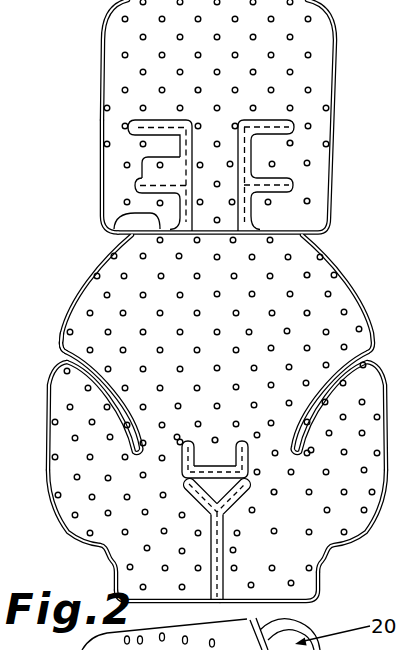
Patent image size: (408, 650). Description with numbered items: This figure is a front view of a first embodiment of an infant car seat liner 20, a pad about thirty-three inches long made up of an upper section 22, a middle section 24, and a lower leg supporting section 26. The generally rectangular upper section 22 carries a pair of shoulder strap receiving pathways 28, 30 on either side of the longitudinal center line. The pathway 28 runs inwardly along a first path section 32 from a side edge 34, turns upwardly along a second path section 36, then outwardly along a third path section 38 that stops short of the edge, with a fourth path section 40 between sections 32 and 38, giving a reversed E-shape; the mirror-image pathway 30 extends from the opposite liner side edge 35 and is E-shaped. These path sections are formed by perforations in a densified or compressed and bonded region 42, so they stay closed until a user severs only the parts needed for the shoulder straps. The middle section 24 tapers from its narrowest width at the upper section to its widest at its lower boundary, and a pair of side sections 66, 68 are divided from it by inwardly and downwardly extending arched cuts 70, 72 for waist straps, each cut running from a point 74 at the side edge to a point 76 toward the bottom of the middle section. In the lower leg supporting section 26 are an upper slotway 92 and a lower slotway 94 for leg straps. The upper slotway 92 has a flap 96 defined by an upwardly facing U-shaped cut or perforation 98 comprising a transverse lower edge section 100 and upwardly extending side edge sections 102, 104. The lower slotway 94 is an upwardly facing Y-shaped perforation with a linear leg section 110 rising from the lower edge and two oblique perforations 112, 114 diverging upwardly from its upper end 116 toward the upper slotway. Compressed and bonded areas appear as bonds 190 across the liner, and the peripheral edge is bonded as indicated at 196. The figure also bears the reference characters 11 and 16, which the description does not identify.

The aperture 11 is at (407, 187).
The aperture 16 is at (358, 113).
The infant car seat liner 20 is at (77, 276).
The upper section 22 is at (128, 44).
The middle section 24 is at (118, 304).
The lower leg supporting section 26 is at (110, 523).
The shoulder strap receiving pathway 28 is at (128, 141).
The shoulder strap receiving pathway 30 is at (285, 163).
The first path section 32 is at (115, 219).
The side edge 34 is at (100, 175).
The liner side edge 35 is at (336, 167).
The second path section 36 is at (233, 123).
The third path section 38 is at (197, 89).
The fourth path section 40 is at (161, 157).
The densified or compressed and bonded region 42 is at (137, 119).
The side section 66 is at (85, 485).
The side section 68 is at (355, 487).
The arched cut 70 is at (98, 375).
The arched cut 72 is at (320, 404).
The point 74 is at (63, 351).
The point 76 is at (136, 451).
The upper slotway 92 is at (176, 474).
The lower slotway 94 is at (195, 513).
The flap 96 is at (205, 456).
The U-shaped cut or perforation 98 is at (246, 440).
The lower edge section 100 is at (232, 497).
The side edge section 102 is at (186, 448).
The side edge section 104 is at (248, 458).
The linear leg section 110 is at (267, 604).
The oblique perforation 112 is at (197, 494).
The oblique perforation 114 is at (284, 494).
The upper end 116 is at (223, 554).
The bonds 190 is at (308, 276).
The peripheral edge bond 196 is at (307, 311).